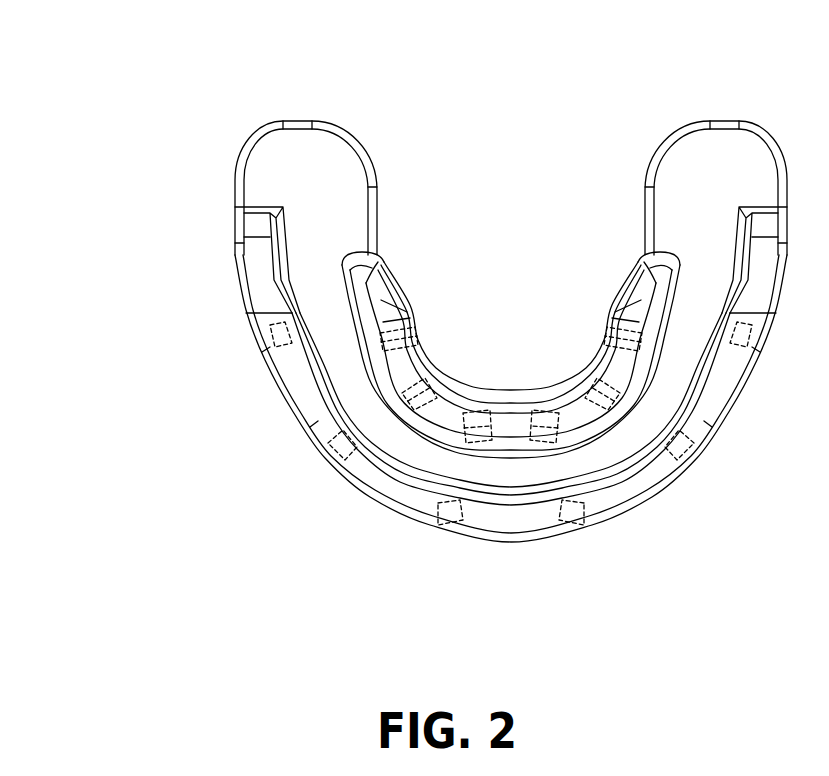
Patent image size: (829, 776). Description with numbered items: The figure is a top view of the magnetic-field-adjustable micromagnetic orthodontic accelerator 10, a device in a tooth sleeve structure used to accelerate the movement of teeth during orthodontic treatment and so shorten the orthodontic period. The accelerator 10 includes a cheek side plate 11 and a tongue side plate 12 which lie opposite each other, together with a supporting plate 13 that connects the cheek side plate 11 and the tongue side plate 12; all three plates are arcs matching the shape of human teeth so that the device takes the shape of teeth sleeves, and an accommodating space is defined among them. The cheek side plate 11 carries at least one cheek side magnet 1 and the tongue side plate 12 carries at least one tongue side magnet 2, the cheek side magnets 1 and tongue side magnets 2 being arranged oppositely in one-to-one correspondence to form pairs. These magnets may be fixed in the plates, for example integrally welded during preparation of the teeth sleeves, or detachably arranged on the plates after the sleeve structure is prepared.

The magnetic-field-adjustable micromagnetic orthodontic accelerator 10 is at (542, 36).
The supporting plate 13 is at (305, 172).
The cheek side plate 11 is at (305, 385).
The tongue side plate 12 is at (440, 415).
The cheek side magnet 1 is at (450, 515).
The tongue side magnet 2 is at (560, 440).